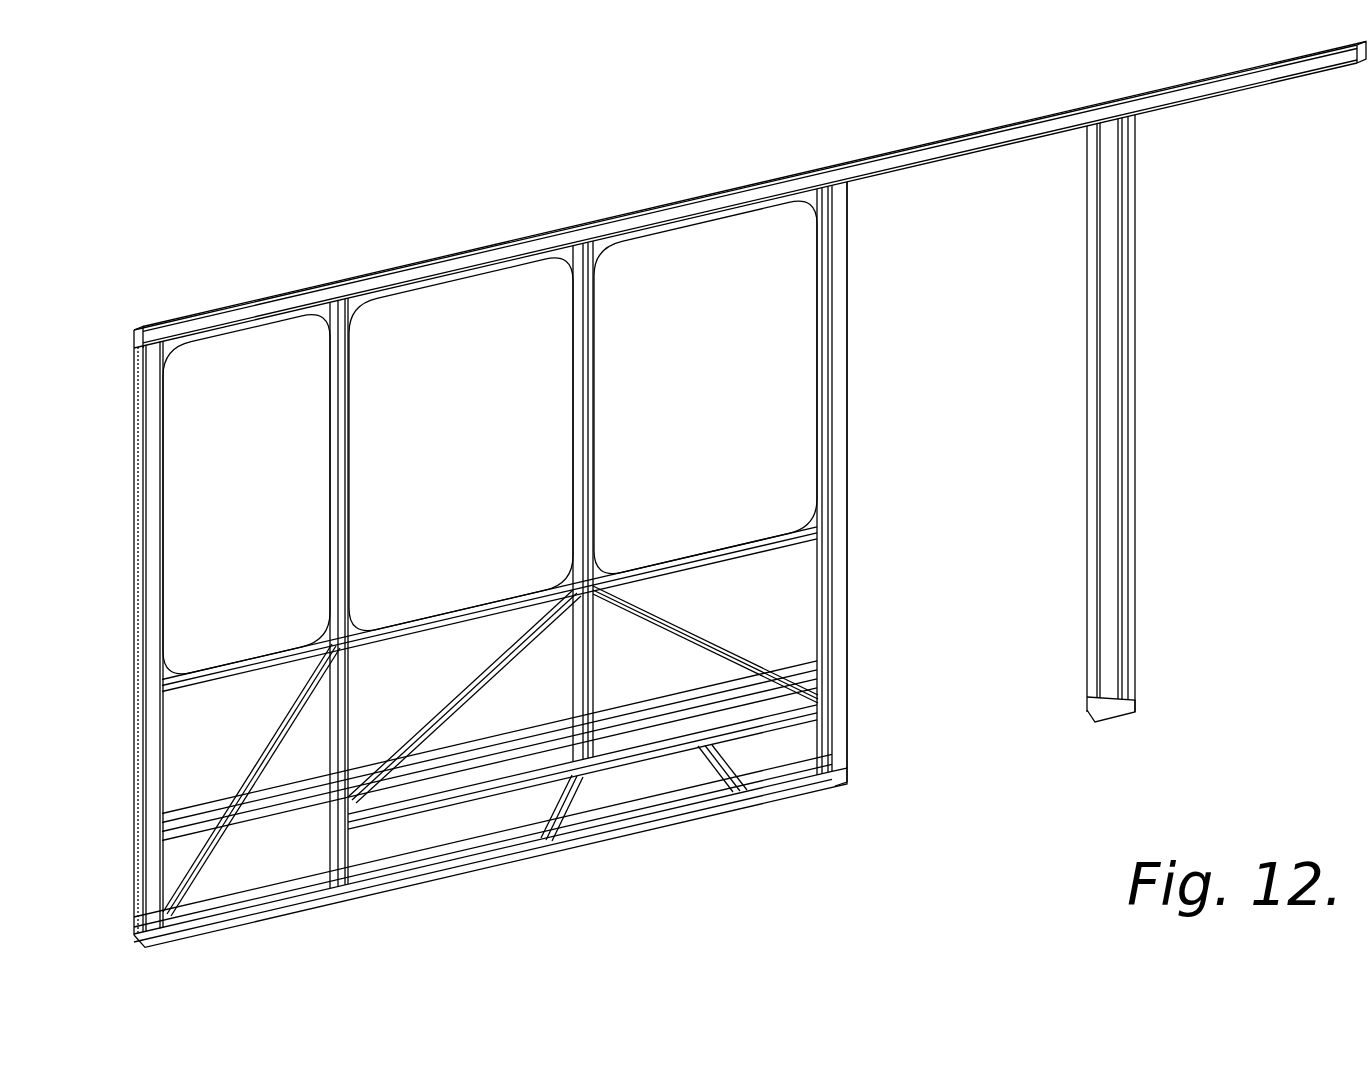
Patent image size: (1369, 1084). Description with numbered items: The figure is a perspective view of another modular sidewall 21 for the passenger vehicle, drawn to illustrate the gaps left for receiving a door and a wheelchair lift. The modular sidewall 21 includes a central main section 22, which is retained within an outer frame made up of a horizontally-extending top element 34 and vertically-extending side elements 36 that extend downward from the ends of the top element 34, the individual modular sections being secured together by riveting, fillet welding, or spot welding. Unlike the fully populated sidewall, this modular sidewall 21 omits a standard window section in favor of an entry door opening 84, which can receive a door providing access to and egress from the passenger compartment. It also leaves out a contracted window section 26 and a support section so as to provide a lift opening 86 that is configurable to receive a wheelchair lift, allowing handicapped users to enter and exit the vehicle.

The modular sidewall 21 is at (347, 203).
The top element 34 is at (255, 315).
The side element 36 is at (143, 500).
The main section 22 is at (523, 852).
The contracted window section 26 is at (283, 909).
The entry door opening 84 is at (962, 688).
The lift opening 86 is at (1205, 640).